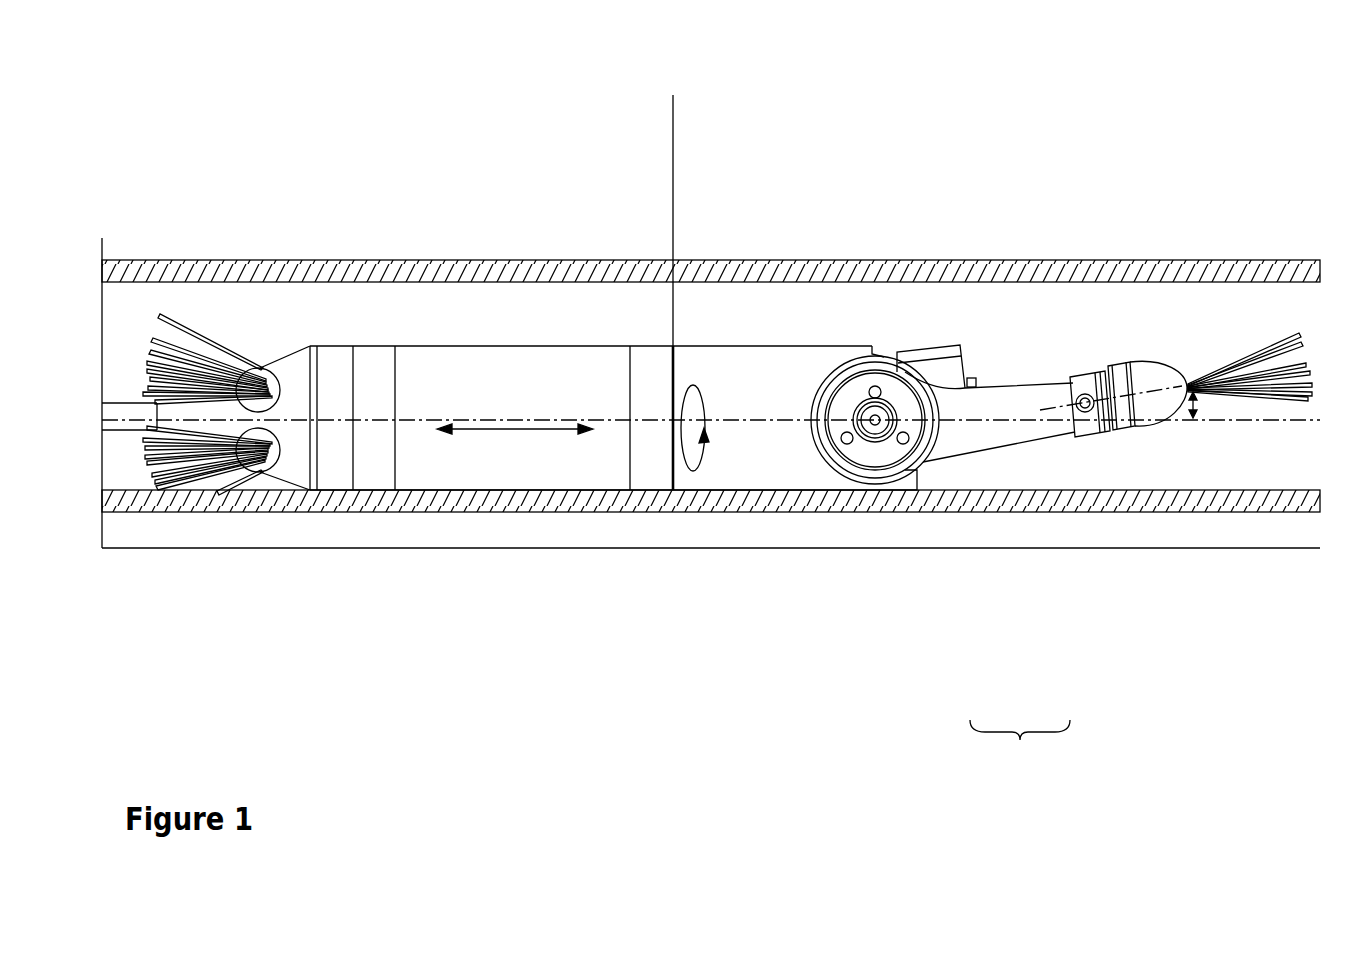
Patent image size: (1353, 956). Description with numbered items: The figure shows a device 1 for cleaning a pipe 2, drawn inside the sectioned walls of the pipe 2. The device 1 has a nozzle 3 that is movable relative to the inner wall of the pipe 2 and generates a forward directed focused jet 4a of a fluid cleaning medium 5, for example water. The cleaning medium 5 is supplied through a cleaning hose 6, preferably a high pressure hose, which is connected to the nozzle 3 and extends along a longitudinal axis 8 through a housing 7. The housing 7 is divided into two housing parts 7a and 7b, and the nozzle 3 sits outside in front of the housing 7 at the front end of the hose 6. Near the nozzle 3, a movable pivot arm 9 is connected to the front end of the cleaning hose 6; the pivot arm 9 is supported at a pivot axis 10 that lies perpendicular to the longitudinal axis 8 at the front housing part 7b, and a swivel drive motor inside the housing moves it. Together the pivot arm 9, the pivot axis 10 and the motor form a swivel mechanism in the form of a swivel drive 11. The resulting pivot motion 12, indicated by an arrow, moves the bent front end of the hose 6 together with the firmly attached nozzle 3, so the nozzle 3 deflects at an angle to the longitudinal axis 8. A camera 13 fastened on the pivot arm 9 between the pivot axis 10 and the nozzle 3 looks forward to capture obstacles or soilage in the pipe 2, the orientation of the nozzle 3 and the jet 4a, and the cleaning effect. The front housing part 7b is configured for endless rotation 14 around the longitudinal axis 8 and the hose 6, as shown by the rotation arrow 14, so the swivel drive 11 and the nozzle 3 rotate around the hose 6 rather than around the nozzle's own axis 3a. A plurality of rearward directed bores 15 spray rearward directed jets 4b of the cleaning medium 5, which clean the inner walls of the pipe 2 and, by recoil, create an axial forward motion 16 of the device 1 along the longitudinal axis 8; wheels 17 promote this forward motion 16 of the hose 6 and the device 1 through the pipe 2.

The device 1 is at (415, 143).
The pipe 2 is at (226, 267).
The nozzle 3 is at (1162, 363).
The axis of nozzle 3a is at (1138, 393).
The forward directed focused jet 4a is at (1240, 361).
The rearward directed jets 4b is at (181, 321).
The fluid cleaning medium 5 is at (177, 472).
The cleaning hose 6 is at (118, 409).
The housing 7 is at (463, 355).
The housing part 7a is at (664, 101).
The housing part 7b is at (728, 101).
The longitudinal axis 8 is at (409, 420).
The pivot arm 9 is at (1018, 400).
The pivot axis 10 is at (857, 457).
The swivel drive 11 is at (1032, 778).
The pivot motion 12 is at (1193, 403).
The camera 13 is at (938, 365).
The rotation 14 is at (688, 457).
The rearward directed bores 15 is at (272, 385).
The axial forward motion 16 is at (495, 430).
The wheels 17 is at (878, 430).